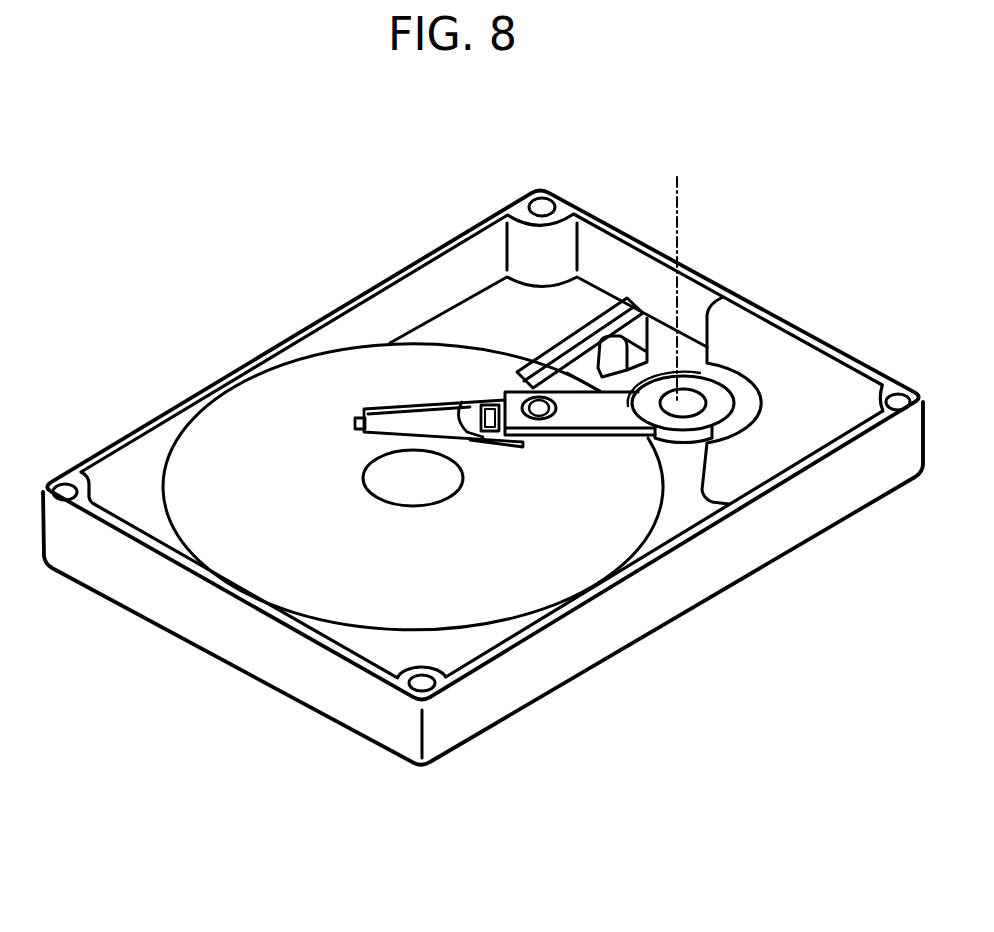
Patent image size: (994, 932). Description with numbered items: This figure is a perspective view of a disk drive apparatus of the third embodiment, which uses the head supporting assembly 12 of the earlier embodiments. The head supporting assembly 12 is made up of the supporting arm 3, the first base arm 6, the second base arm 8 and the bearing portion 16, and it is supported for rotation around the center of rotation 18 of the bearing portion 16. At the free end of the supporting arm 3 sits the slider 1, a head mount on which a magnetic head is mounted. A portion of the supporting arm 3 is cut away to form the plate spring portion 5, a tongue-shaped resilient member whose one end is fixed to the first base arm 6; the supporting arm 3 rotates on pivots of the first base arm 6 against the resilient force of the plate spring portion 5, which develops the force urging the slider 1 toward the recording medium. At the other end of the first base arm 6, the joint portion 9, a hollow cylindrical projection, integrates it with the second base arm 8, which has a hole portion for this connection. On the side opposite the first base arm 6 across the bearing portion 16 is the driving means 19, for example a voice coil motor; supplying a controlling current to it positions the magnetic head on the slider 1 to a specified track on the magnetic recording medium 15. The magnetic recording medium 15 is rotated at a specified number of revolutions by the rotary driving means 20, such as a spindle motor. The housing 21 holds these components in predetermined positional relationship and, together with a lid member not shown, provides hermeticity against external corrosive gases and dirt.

The slider 1 is at (360, 418).
The supporting arm 3 is at (420, 410).
The plate spring portion 5 is at (497, 400).
The first base arm 6 is at (465, 402).
The second base arm 8 is at (572, 395).
The joint portion 9 is at (541, 419).
The head supporting assembly 12 is at (525, 434).
The magnetic recording medium 15 is at (196, 486).
The bearing portion 16 is at (674, 390).
The center of rotation 18 is at (678, 197).
The driving means 19 is at (823, 378).
The rotary driving means 20 is at (405, 468).
The housing 21 is at (328, 695).